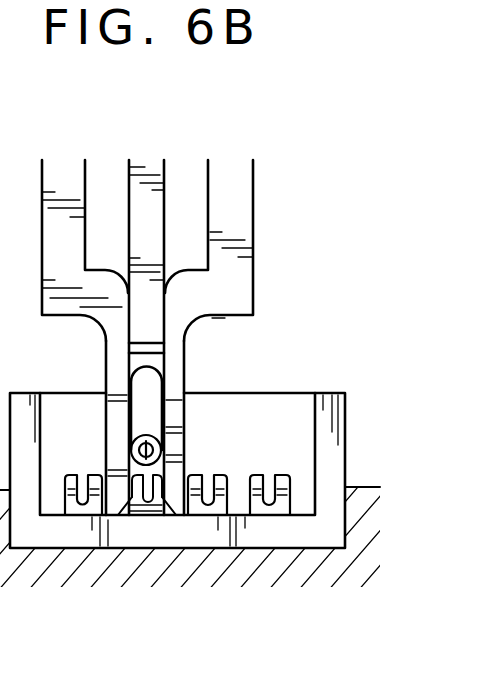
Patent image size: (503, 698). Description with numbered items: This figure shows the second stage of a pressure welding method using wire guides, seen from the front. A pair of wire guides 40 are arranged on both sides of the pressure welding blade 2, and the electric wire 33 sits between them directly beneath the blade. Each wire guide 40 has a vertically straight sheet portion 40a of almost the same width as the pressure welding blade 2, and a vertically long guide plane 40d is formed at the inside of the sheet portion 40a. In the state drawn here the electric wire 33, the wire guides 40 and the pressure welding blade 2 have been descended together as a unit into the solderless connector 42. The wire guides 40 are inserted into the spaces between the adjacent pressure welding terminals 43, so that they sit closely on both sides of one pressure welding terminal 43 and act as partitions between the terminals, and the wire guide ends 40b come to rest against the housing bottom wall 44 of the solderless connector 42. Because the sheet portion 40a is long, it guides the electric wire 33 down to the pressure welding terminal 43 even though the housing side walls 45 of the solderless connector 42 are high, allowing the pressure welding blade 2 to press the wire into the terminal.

The pressure welding blade 2 is at (155, 205).
The wire guides 40 is at (107, 376).
The sheet portion 40a is at (184, 472).
The wire guide ends 40b is at (177, 517).
The guide plane 40d is at (151, 407).
The electric wire 33 is at (130, 452).
The solderless connector 42 is at (346, 411).
The pressure welding terminals 43 is at (138, 517).
The housing bottom wall 44 is at (272, 537).
The housing side walls 45 is at (340, 458).